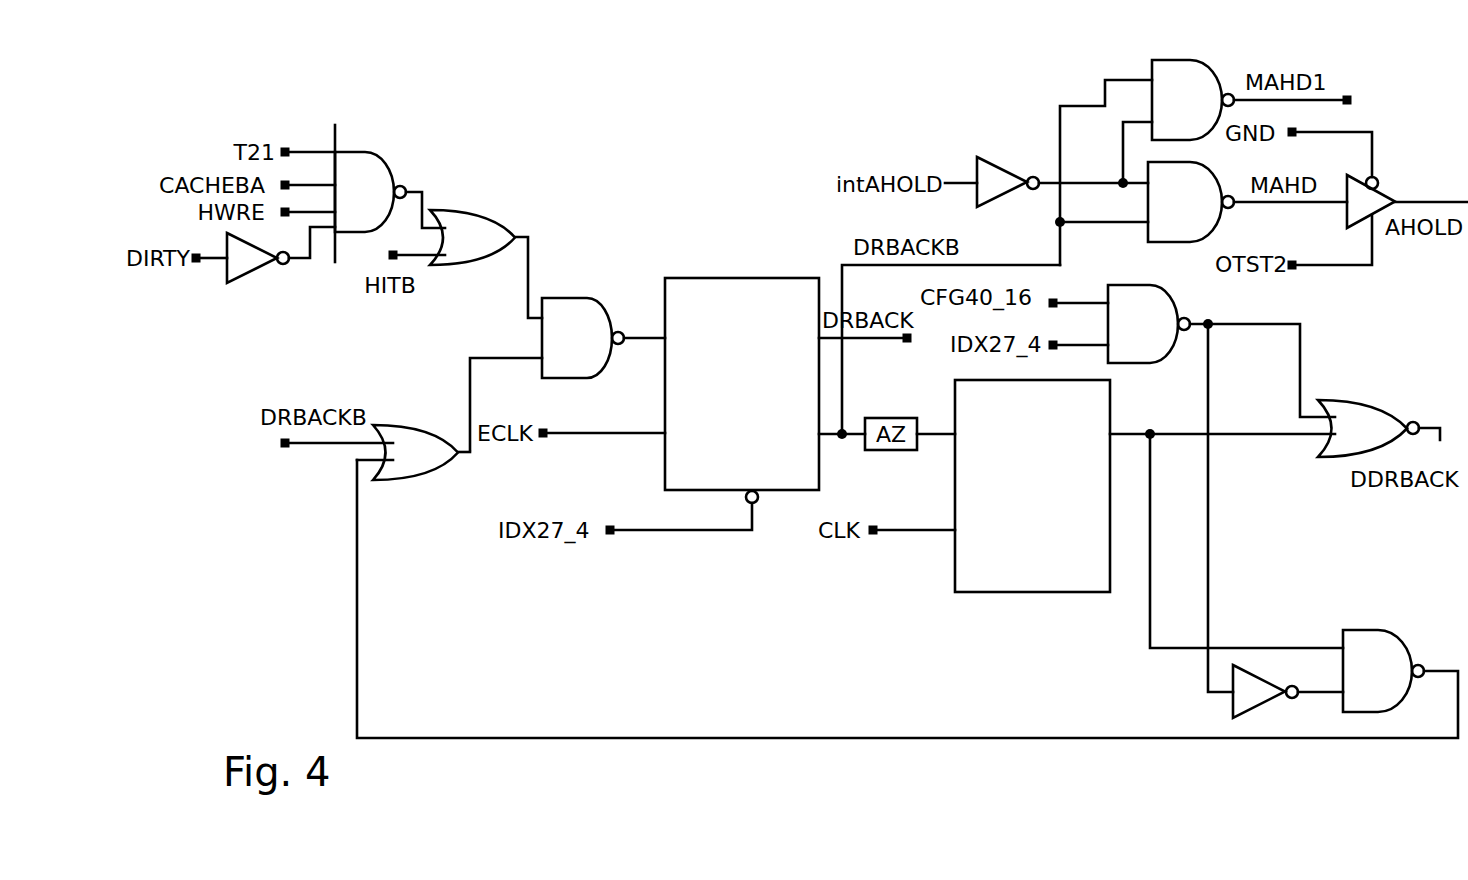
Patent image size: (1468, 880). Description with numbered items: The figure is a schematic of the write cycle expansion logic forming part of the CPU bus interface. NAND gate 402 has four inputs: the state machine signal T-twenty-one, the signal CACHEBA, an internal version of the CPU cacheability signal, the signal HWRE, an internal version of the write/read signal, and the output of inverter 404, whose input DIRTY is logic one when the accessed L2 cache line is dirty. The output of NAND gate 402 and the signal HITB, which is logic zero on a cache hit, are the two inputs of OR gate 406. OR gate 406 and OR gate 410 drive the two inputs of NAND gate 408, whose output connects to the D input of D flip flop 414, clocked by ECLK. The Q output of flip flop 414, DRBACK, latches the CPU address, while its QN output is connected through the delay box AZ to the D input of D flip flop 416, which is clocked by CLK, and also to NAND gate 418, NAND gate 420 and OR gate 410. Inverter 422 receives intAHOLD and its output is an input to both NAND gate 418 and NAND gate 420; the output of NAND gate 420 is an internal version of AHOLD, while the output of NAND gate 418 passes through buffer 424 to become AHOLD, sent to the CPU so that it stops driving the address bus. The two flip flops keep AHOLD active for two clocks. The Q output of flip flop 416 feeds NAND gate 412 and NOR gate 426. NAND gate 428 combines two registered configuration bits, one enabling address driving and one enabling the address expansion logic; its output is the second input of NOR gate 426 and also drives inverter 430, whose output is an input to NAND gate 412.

The NAND gate 402 is at (385, 152).
The inverter 404 is at (240, 284).
The OR gate 406 is at (482, 208).
The NAND gate 408 is at (575, 298).
The OR gate 410 is at (412, 480).
The NAND gate 412 is at (1378, 630).
The D flip flop 414 is at (728, 278).
The D flip flop 416 is at (1032, 594).
The NAND gate 418 is at (1158, 240).
The NAND gate 420 is at (1178, 60).
The inverter 422 is at (993, 158).
The buffer 424 is at (1380, 192).
The NOR gate 426 is at (1357, 400).
The NAND gate 428 is at (1172, 362).
The inverter 430 is at (1233, 712).